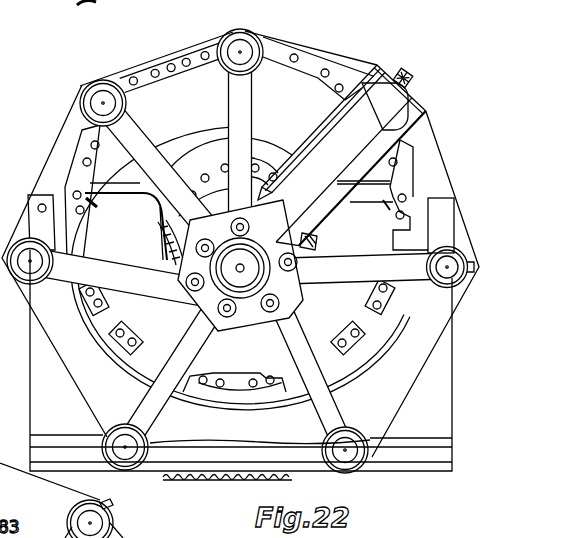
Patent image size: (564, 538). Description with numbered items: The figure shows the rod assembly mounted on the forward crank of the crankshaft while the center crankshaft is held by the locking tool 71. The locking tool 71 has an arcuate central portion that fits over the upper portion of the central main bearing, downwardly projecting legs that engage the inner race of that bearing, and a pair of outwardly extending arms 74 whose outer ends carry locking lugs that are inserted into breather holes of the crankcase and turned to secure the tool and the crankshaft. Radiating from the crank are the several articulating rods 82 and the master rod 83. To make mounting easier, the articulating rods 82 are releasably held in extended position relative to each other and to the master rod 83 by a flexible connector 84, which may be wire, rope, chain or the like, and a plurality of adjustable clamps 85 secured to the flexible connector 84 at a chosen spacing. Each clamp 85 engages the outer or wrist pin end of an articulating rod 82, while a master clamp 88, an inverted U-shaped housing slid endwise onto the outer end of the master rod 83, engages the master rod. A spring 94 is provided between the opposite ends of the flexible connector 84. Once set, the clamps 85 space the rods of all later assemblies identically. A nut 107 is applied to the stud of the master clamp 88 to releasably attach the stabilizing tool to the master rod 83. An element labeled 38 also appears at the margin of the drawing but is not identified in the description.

The locking tool 71 is at (267, 145).
The outwardly extending arms 74 is at (118, 190).
The articulating rods 82 is at (143, 152).
The master rod 83 is at (330, 187).
The flexible connector 84 is at (430, 161).
The adjustable clamps 85 is at (459, 247).
The master clamp 88 is at (373, 93).
The spring 94 is at (172, 478).
The nut 107 is at (412, 82).
The frame member 38 is at (50, 458).